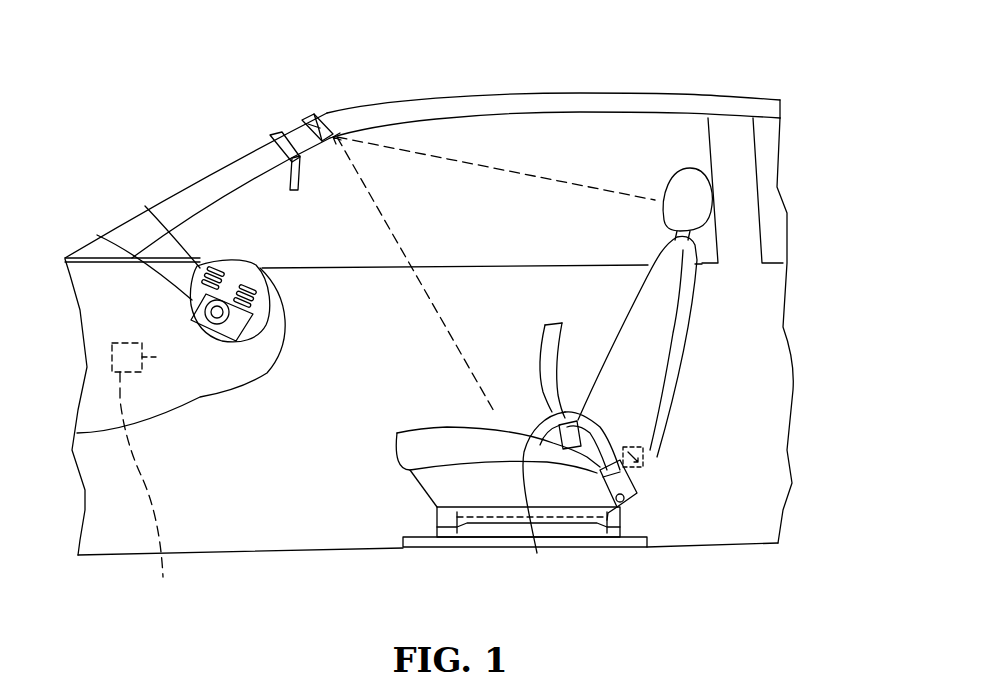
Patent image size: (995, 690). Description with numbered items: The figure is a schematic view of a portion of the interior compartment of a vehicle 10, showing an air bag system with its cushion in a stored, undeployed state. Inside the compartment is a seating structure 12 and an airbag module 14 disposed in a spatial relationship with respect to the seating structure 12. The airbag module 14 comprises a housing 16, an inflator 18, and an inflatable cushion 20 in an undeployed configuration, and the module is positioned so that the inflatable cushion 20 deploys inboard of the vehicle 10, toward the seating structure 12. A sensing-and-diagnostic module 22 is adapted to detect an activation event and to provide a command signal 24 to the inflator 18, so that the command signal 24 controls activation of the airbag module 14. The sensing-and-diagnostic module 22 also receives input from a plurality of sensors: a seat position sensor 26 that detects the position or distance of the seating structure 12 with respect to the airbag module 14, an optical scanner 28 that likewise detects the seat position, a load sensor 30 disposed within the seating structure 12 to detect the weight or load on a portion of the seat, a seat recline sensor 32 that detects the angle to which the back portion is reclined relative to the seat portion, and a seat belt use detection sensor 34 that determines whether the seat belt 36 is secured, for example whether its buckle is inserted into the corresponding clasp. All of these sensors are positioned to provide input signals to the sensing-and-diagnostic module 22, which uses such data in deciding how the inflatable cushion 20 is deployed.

The vehicle 10 is at (802, 92).
The seating structure 12 is at (682, 353).
The airbag module 14 is at (257, 316).
The housing 16 is at (97, 235).
The inflator 18 is at (222, 330).
The inflatable cushion 20 is at (145, 206).
The sensing-and-diagnostic module 22 is at (148, 488).
The command signal 24 is at (195, 340).
The seat position sensor 26 is at (432, 541).
The optical scanner 28 is at (300, 114).
The load sensor 30 is at (622, 510).
The seat recline sensor 32 is at (645, 465).
The seat belt use detection sensor 34 is at (612, 497).
The seat belt 36 is at (569, 495).